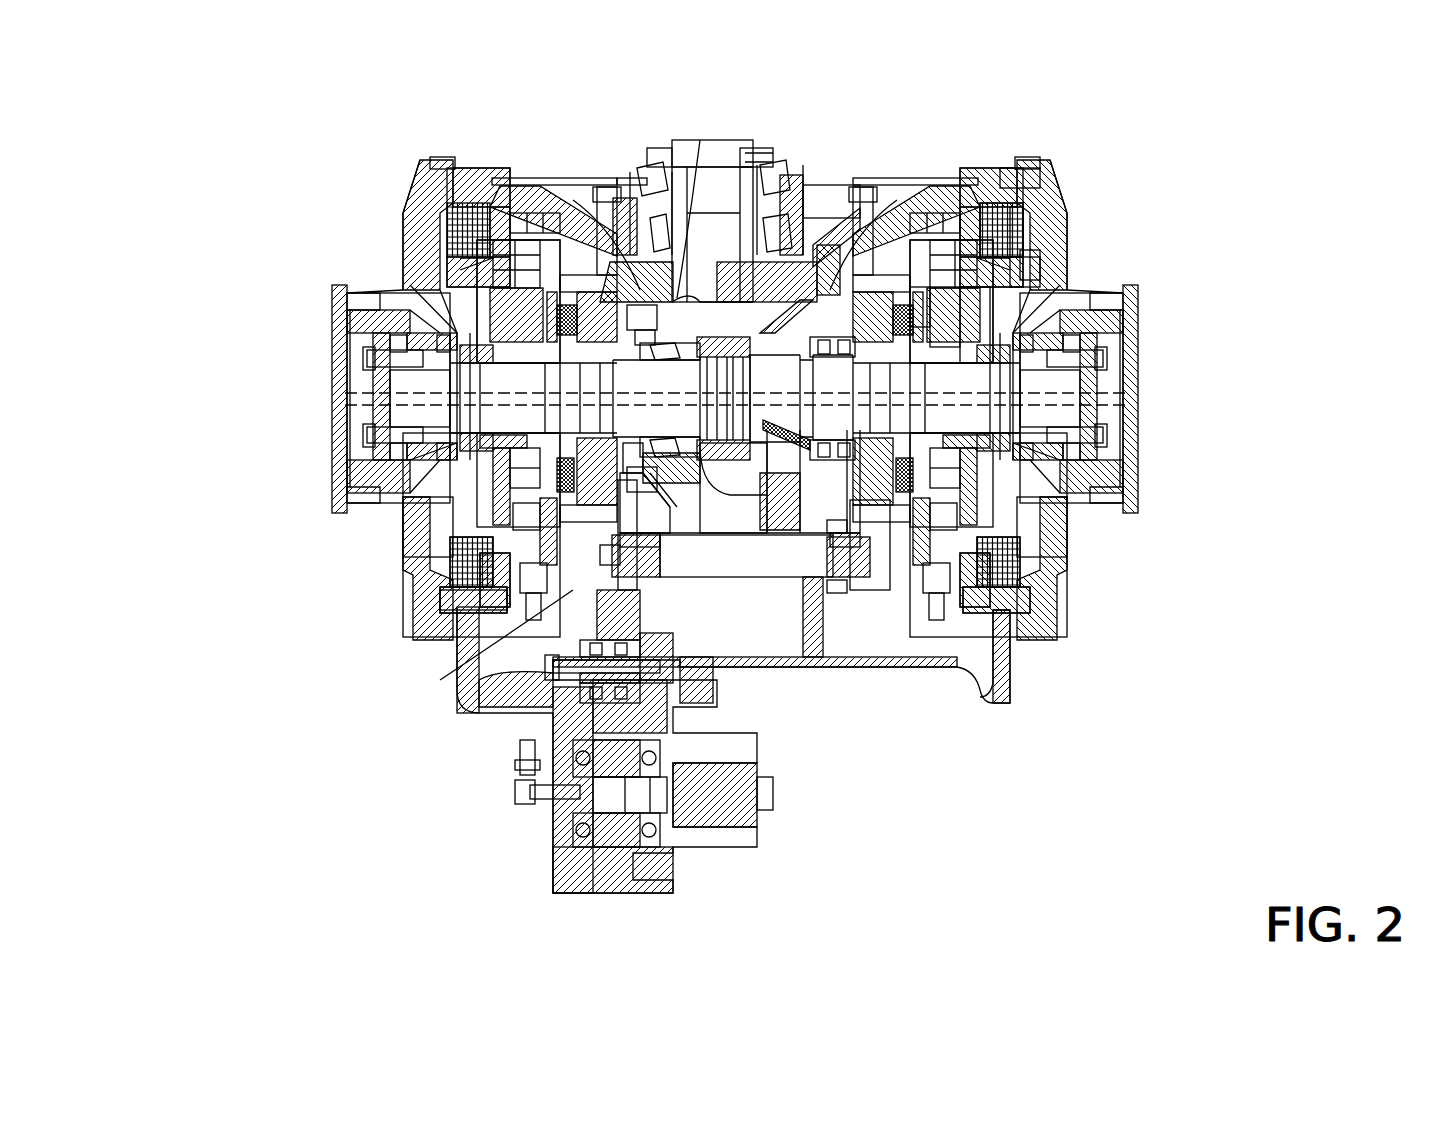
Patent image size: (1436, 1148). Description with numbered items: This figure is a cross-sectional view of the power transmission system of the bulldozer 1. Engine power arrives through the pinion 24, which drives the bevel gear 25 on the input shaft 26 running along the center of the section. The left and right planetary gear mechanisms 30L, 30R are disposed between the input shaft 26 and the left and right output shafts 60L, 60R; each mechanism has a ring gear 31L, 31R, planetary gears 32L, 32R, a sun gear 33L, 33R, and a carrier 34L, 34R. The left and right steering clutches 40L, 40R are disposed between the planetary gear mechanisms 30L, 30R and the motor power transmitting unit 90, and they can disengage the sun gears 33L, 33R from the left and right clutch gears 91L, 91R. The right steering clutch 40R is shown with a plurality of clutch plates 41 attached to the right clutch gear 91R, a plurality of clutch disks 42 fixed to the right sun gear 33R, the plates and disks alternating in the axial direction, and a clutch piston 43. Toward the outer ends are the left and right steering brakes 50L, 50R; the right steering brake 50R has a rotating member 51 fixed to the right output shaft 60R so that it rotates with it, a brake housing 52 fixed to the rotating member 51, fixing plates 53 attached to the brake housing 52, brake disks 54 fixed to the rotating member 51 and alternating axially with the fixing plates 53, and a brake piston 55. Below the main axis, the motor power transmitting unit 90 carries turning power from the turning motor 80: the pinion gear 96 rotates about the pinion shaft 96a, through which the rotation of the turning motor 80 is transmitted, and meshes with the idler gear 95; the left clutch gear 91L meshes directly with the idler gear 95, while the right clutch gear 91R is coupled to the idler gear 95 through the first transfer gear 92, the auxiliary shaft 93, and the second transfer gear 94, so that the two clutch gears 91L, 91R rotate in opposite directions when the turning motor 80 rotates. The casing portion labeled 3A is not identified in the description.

The bulldozer 1 is at (745, 501).
The axle case 3A is at (338, 300).
The pinion 24 is at (763, 325).
The bevel gear 25 is at (828, 235).
The input shaft 26 is at (682, 388).
The left steering clutch 40L is at (583, 278).
The right steering clutch 40R is at (985, 95).
The clutch plates 41 is at (905, 300).
The clutch disks 42 is at (887, 295).
The clutch piston 43 is at (877, 285).
The left steering brake 50L is at (487, 195).
The right steering brake 50R is at (1150, 152).
The rotating member 51 is at (1028, 285).
The brake housing 52 is at (1022, 215).
The fixing plates 53 is at (1030, 185).
The brake disks 54 is at (1020, 262).
The brake piston 55 is at (1020, 240).
The left output shaft 60L is at (405, 398).
The right output shaft 60R is at (1062, 398).
The left planetary gear mechanism 30L is at (248, 520).
The left ring gear 31L is at (407, 597).
The left planetary gears 32L is at (407, 557).
The left sun gear 33L is at (403, 500).
The left carrier 34L is at (430, 607).
The right planetary gear mechanism 30R is at (1235, 523).
The right ring gear 31R is at (1050, 565).
The right planetary gears 32R is at (1050, 540).
The right sun gear 33R is at (1070, 505).
The right carrier 34R is at (1045, 600).
The turning motor 80 is at (760, 817).
The motor power transmitting unit 90 is at (710, 722).
The left clutch gear 91L is at (497, 503).
The right clutch gear 91R is at (880, 503).
The first transfer gear 92 is at (863, 503).
The auxiliary shaft 93 is at (790, 570).
The second transfer gear 94 is at (770, 553).
The idler gear 95 is at (607, 512).
The pinion gear 96 is at (603, 840).
The pinion shaft 96a is at (650, 808).